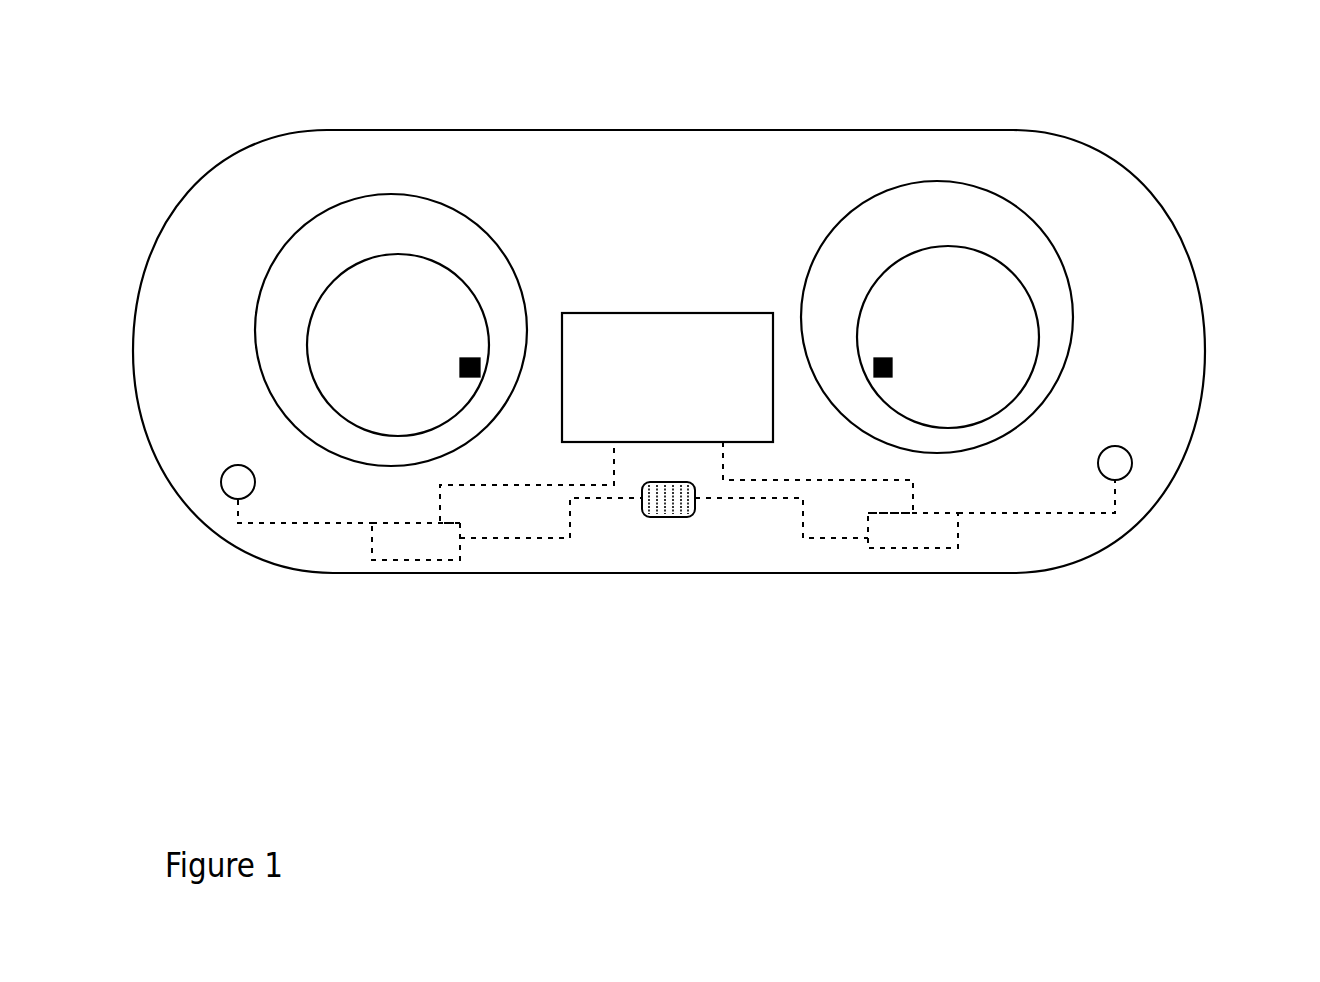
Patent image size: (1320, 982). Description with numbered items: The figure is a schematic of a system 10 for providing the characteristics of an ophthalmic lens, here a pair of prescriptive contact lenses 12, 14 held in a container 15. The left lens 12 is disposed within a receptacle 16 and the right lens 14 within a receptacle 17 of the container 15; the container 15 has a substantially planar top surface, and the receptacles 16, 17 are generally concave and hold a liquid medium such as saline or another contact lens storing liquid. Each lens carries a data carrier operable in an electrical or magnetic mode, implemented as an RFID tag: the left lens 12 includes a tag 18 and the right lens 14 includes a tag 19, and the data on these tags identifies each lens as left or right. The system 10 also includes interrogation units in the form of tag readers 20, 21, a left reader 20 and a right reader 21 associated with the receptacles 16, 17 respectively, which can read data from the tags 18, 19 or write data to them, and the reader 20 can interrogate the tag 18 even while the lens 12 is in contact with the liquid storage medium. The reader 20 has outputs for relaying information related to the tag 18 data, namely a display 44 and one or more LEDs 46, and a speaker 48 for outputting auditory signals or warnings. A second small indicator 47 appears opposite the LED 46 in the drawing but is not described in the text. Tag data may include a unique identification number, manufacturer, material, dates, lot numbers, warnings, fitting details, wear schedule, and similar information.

The system 10 is at (688, 807).
The prescriptive contact lens 12 is at (334, 281).
The prescriptive contact lens 14 is at (988, 422).
The container 15 is at (297, 425).
The receptacle 16 is at (785, 573).
The receptacle 17 is at (1033, 217).
The data carrier 18 is at (470, 358).
The data carrier 19 is at (883, 358).
The tag reader 20 is at (417, 560).
The tag reader 21 is at (938, 548).
The display 44 is at (668, 313).
The LED 46 is at (221, 482).
The right indicator 47 is at (1115, 446).
The speaker 48 is at (655, 517).